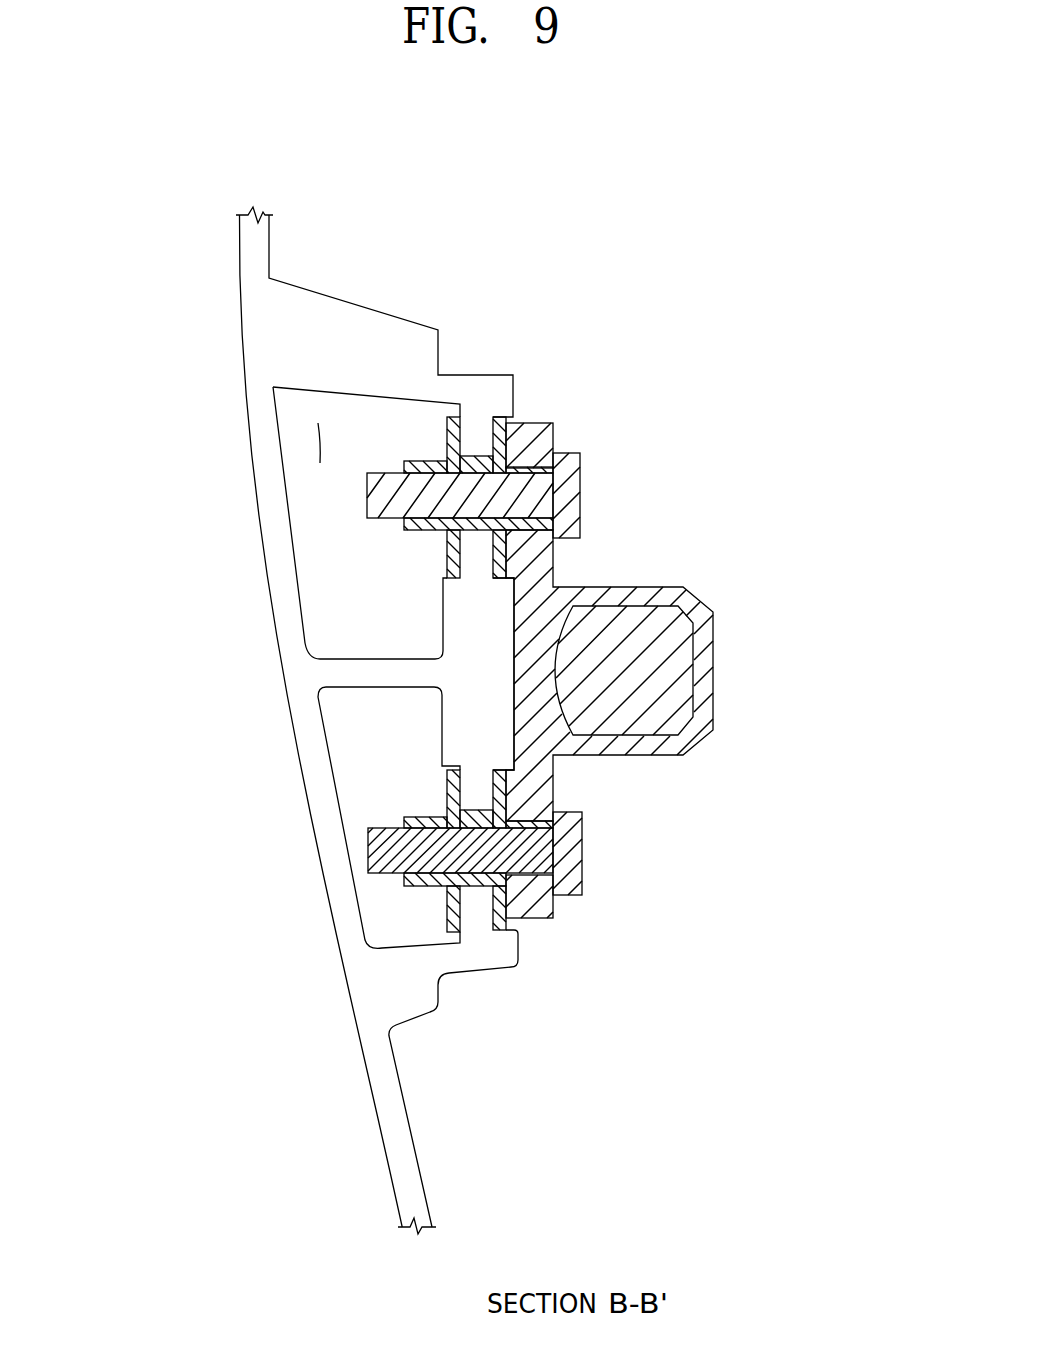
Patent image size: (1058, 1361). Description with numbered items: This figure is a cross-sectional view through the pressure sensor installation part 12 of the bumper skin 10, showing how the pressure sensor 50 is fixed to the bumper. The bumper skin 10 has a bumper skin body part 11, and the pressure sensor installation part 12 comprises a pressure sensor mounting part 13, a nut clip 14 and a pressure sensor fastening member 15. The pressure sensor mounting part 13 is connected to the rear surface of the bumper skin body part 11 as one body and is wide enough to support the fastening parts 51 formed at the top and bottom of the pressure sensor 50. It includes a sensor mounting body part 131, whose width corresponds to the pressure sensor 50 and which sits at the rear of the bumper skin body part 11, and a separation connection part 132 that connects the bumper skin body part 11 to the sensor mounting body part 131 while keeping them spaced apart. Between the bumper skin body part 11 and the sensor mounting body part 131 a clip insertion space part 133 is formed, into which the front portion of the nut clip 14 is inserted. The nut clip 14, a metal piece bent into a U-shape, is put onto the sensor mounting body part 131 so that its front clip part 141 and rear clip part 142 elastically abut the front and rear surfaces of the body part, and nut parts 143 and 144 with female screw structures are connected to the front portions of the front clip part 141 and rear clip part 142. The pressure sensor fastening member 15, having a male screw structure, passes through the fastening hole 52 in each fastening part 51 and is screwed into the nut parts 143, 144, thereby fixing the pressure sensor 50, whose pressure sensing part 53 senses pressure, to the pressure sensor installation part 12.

The bumper skin 10 is at (306, 803).
The bumper skin body part 11 is at (342, 907).
The pressure sensor installation part 12 is at (523, 980).
The pressure sensor mounting part 13 is at (323, 440).
The nut clip 14 is at (507, 545).
The pressure sensor fastening member 15 is at (535, 493).
The pressure sensor 50 is at (660, 713).
The fastening part 51 is at (540, 445).
The fastening hole 52 is at (530, 478).
The pressure sensing part 53 is at (647, 664).
The sensor mounting body part 131 is at (468, 713).
The separation connection part 132 is at (297, 325).
The clip insertion space part 133 is at (318, 442).
The front clip part 141 is at (448, 428).
The rear clip part 142 is at (503, 420).
The nut part 143 is at (413, 461).
The nut part 144 is at (474, 456).